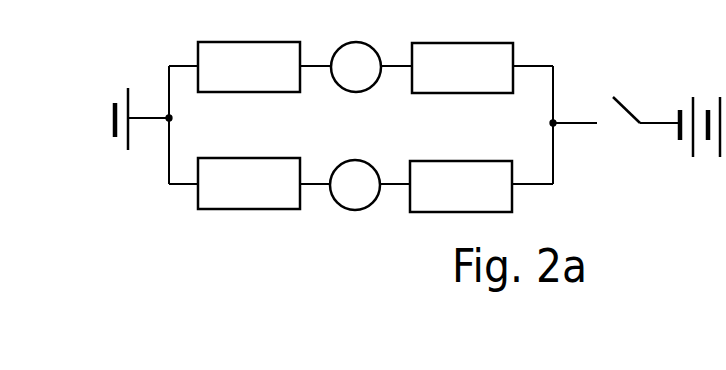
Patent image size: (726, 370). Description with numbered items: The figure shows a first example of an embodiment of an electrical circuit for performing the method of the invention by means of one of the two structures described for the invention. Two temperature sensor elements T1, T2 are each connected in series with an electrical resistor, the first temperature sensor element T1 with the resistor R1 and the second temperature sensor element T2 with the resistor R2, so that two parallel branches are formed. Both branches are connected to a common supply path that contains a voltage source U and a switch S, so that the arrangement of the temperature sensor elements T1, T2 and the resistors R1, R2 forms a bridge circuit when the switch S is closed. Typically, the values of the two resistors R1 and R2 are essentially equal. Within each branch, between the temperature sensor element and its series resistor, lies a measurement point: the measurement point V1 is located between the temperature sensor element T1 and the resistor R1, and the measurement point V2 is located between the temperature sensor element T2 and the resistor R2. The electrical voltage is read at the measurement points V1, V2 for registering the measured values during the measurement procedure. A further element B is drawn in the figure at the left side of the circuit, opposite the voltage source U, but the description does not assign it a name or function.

The temperature sensor element T1 is at (249, 183).
The temperature sensor element T2 is at (249, 67).
The measurement point V1 is at (355, 185).
The measurement point V2 is at (356, 67).
The electrical resistor R1 is at (461, 186).
The electrical resistor R2 is at (462, 68).
The switch S is at (624, 124).
The voltage source U is at (700, 110).
The battery B is at (121, 119).